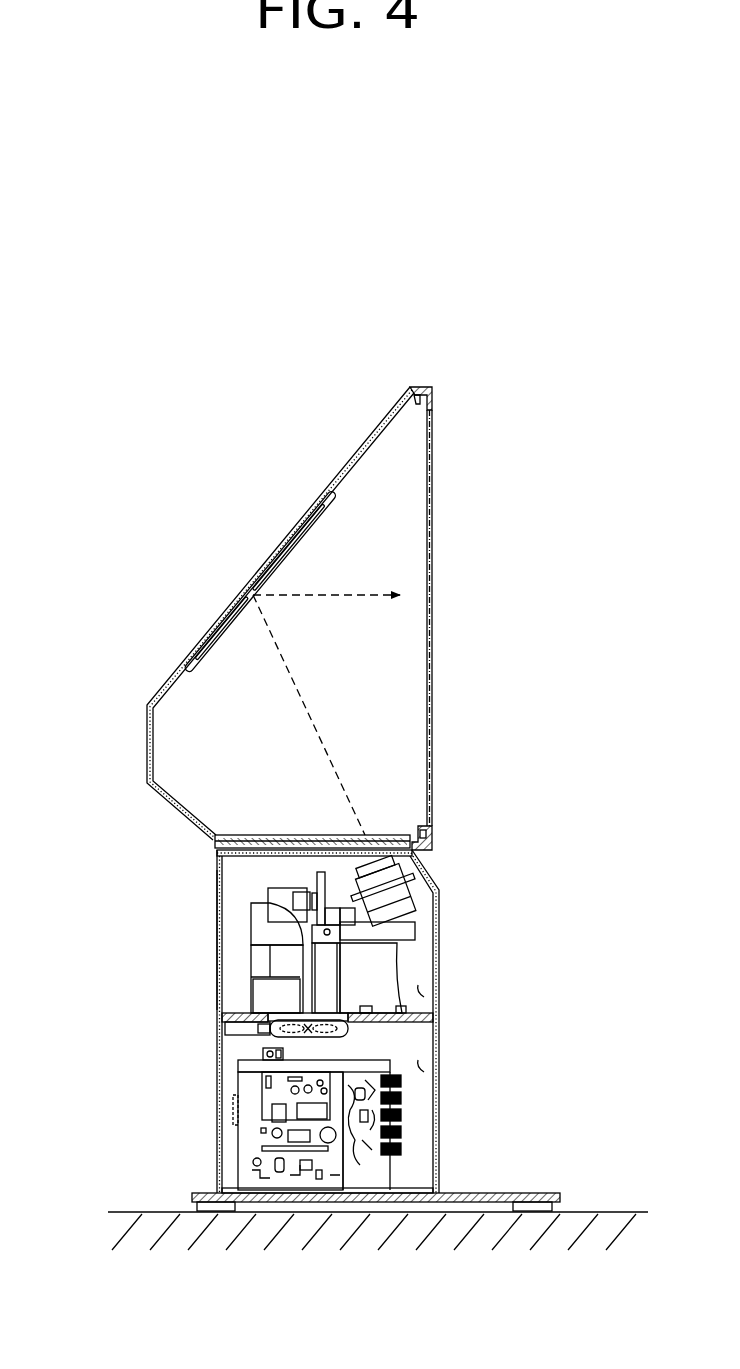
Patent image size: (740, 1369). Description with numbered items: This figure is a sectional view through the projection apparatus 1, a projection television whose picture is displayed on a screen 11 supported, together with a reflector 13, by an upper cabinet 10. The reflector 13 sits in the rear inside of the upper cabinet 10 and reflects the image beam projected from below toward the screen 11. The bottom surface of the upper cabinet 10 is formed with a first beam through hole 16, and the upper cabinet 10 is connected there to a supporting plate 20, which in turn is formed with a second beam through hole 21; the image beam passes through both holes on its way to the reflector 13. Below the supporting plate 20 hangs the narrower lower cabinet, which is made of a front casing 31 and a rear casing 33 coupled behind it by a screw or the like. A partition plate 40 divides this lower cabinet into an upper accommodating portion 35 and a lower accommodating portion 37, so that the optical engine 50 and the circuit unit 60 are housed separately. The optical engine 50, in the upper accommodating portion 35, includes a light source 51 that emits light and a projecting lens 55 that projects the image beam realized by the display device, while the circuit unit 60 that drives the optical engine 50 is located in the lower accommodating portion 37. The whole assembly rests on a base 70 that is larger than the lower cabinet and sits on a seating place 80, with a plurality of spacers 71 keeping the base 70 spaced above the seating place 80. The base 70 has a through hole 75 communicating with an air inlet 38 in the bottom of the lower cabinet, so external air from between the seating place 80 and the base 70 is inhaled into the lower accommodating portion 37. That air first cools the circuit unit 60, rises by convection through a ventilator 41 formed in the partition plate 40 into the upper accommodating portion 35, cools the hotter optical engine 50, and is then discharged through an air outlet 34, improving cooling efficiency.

The projection apparatus 1 is at (94, 476).
The upper cabinet 10 is at (347, 457).
The screen 11 is at (432, 570).
The reflector 13 is at (268, 553).
The first beam through hole 16 is at (400, 826).
The supporting plate 20 is at (217, 848).
The second beam through hole 21 is at (415, 851).
The front casing 31 is at (435, 878).
The rear casing 33 is at (215, 940).
The air outlet 34 is at (215, 895).
The upper accommodating portion 35 is at (422, 990).
The lower accommodating portion 37 is at (422, 1065).
The air inlet 38 is at (338, 1195).
The partition plate 40 is at (437, 1020).
The ventilator 41 is at (275, 1048).
The optical engine 50 is at (410, 960).
The light source 51 is at (262, 1000).
The projecting lens 55 is at (410, 897).
The circuit unit 60 is at (418, 1135).
The base 70 is at (400, 1202).
The spacers 71 is at (533, 1211).
The through hole 75 is at (272, 1195).
The seating place 80 is at (465, 1240).